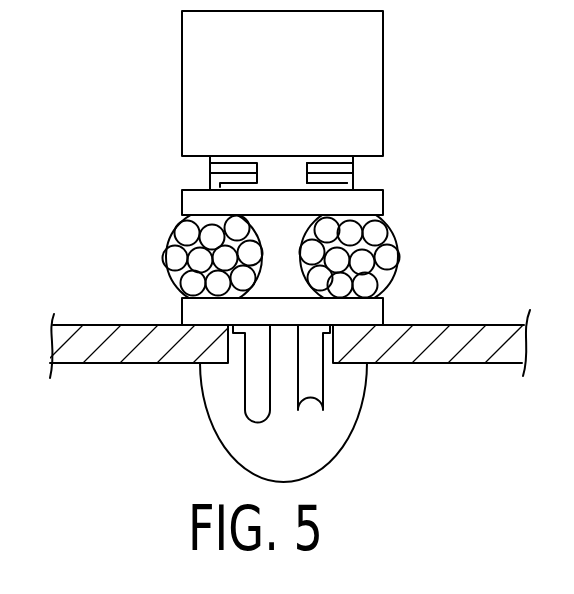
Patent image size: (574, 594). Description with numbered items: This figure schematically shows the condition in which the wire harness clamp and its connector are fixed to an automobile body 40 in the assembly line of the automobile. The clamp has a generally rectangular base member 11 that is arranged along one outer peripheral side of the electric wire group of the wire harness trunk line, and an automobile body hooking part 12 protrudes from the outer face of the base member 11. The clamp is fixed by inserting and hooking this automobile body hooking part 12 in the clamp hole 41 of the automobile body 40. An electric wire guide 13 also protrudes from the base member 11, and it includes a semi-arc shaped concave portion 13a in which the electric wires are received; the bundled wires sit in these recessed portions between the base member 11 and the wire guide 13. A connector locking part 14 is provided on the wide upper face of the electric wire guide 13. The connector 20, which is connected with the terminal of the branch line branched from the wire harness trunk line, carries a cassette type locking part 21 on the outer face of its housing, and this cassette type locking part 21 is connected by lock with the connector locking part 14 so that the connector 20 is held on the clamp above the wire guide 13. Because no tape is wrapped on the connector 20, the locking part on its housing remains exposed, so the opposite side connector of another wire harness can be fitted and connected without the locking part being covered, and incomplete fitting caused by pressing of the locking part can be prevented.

The connector 20 is at (372, 82).
The connector locking part 14 is at (345, 174).
The cassette type locking part 21 is at (345, 174).
The electric wire guide 13 is at (272, 246).
The concave portion 13a is at (370, 202).
The base member 11 is at (200, 310).
The automobile body hooking part 12 is at (305, 403).
The clamp hole 41 is at (239, 338).
The automobile body 40 is at (444, 366).